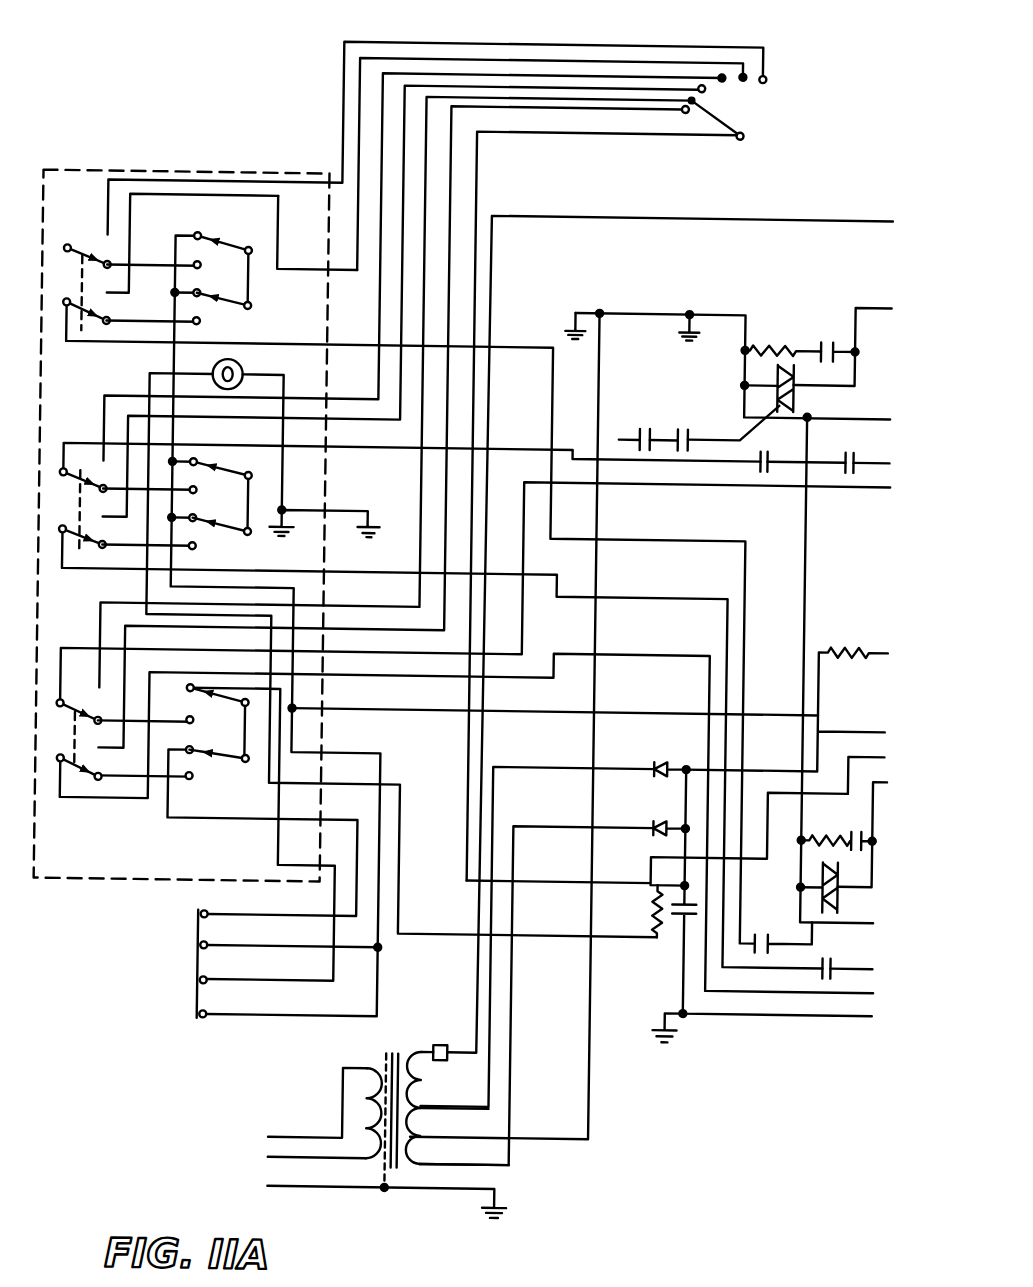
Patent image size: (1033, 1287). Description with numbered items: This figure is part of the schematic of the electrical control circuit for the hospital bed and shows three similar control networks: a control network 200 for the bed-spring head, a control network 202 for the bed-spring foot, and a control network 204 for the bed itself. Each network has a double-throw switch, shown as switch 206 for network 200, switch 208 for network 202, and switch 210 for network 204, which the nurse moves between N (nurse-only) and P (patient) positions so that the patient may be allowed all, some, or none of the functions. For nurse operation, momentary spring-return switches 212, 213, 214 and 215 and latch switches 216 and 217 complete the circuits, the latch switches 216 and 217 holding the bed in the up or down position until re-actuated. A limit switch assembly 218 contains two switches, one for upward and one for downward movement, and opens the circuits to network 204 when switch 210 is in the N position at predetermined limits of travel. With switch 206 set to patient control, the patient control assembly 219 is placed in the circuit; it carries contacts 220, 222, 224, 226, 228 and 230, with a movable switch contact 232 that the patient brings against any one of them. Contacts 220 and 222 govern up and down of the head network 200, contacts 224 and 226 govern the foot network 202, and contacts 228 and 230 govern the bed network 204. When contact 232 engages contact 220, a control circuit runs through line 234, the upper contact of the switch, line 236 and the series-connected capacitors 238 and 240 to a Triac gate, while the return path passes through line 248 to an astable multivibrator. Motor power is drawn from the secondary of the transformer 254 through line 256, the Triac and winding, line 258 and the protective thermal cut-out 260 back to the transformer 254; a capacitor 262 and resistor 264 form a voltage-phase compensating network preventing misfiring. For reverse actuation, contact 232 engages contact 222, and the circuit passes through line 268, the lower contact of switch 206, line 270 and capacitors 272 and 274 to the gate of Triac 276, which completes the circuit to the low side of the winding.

The control network 200 is at (49, 262).
The control network 202 is at (50, 486).
The control network 204 is at (46, 709).
The double-throw switch 206 is at (60, 294).
The double-throw switch 208 is at (63, 519).
The double-throw switch 210 is at (58, 753).
The momentary spring-return switch 212 is at (241, 212).
The momentary spring-return switch 213 is at (222, 312).
The momentary spring-return switch 214 is at (255, 437).
The momentary spring-return switch 215 is at (220, 539).
The latch switch 216 is at (237, 667).
The latch switch 217 is at (209, 770).
The limit switch assembly 218 is at (202, 972).
The patient control assembly 219 is at (764, 110).
The contact 220 is at (760, 76).
The contact 222 is at (737, 72).
The contact 224 is at (714, 73).
The contact 226 is at (694, 84).
The contact 228 is at (691, 97).
The contact 230 is at (678, 110).
The switch contact 232 is at (711, 120).
The line 234 is at (485, 43).
The line 236 is at (285, 252).
The capacitor 238 is at (646, 428).
The capacitor 240 is at (702, 414).
The line 248 is at (540, 134).
The transformer 254 is at (379, 1062).
The line 256 is at (594, 1107).
The line 258 is at (488, 305).
The protective thermal cut-out 260 is at (466, 1024).
The capacitor 262 is at (828, 338).
The resistor 264 is at (769, 339).
The line 268 is at (474, 22).
The line 270 is at (312, 350).
The capacitor 272 is at (754, 945).
The capacitor 274 is at (796, 968).
The Triac 276 is at (826, 889).